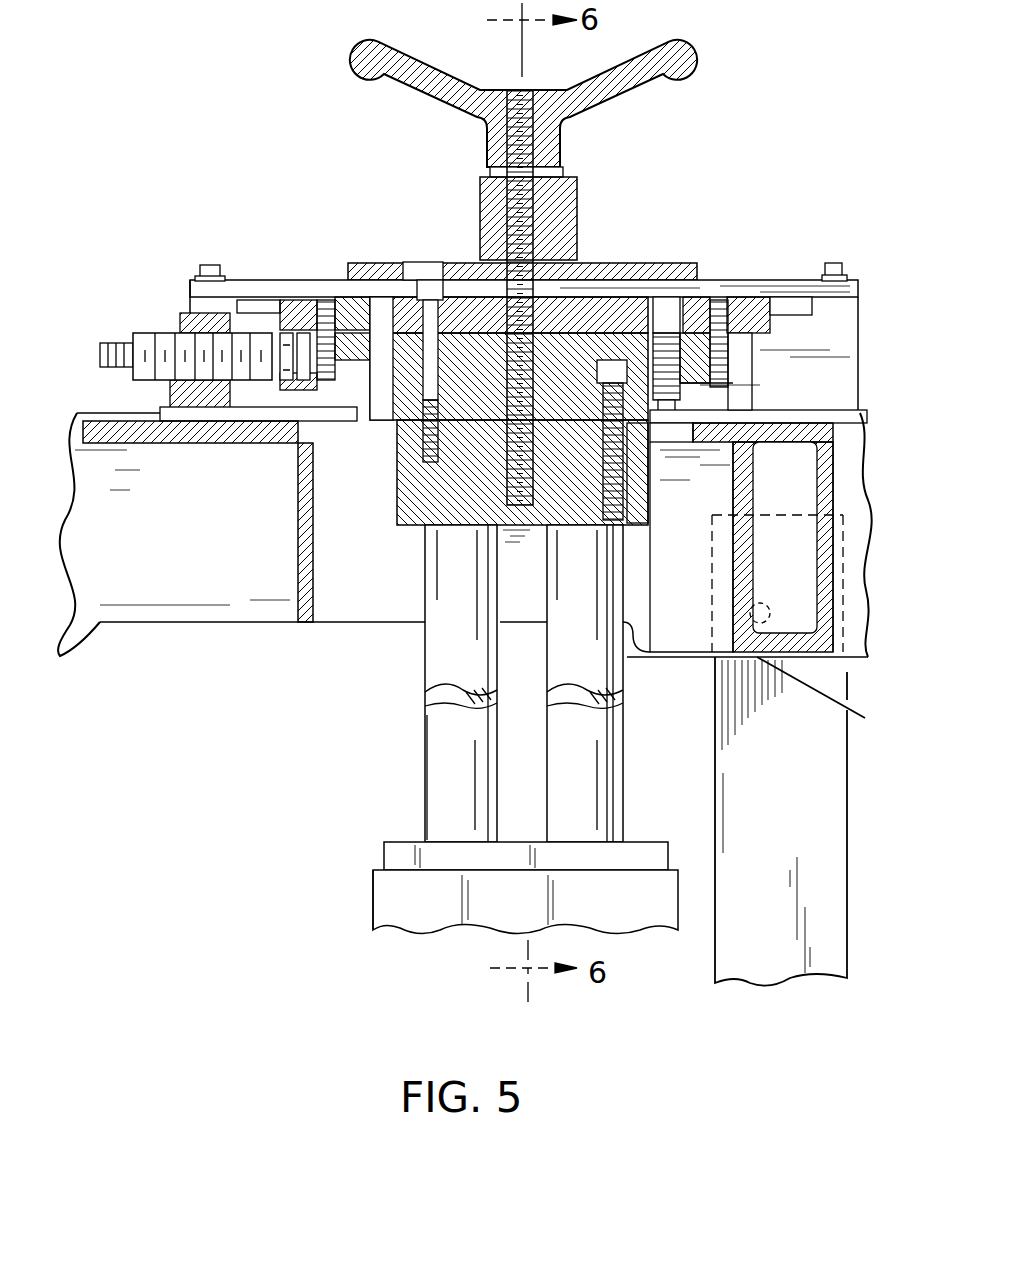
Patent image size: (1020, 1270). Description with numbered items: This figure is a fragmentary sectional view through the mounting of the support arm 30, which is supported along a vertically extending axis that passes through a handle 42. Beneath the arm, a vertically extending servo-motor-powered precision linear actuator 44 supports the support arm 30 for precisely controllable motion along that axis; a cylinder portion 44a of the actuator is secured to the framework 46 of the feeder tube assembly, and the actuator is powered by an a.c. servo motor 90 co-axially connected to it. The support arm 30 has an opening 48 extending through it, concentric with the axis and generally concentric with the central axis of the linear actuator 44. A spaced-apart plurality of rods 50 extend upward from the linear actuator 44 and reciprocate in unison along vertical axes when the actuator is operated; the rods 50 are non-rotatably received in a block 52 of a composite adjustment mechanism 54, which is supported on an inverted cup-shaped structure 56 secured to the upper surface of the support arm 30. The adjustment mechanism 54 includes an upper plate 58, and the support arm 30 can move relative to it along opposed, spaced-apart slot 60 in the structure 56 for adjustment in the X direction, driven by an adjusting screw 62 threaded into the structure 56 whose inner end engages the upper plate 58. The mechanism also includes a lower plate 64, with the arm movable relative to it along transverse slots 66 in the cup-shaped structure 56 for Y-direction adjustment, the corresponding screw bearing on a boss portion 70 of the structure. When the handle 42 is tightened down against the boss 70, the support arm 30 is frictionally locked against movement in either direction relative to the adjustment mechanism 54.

The support arm 30 is at (843, 487).
The handle 42 is at (700, 58).
The linear actuator 44 is at (373, 887).
The cylinder portion 44a is at (355, 932).
The framework 46 is at (847, 847).
The opening 48 is at (392, 610).
The rods 50 is at (572, 770).
The block 52 is at (392, 458).
The adjustment mechanism 54 is at (654, 466).
The cup-shaped structure 56 is at (190, 300).
The upper plate 58 is at (750, 312).
The slot 60 is at (787, 307).
The adjusting screw 62 is at (152, 333).
The lower plate 64 is at (610, 275).
The slots 66 is at (335, 382).
The boss portion 70 is at (577, 192).
The servo motor 90 is at (430, 323).